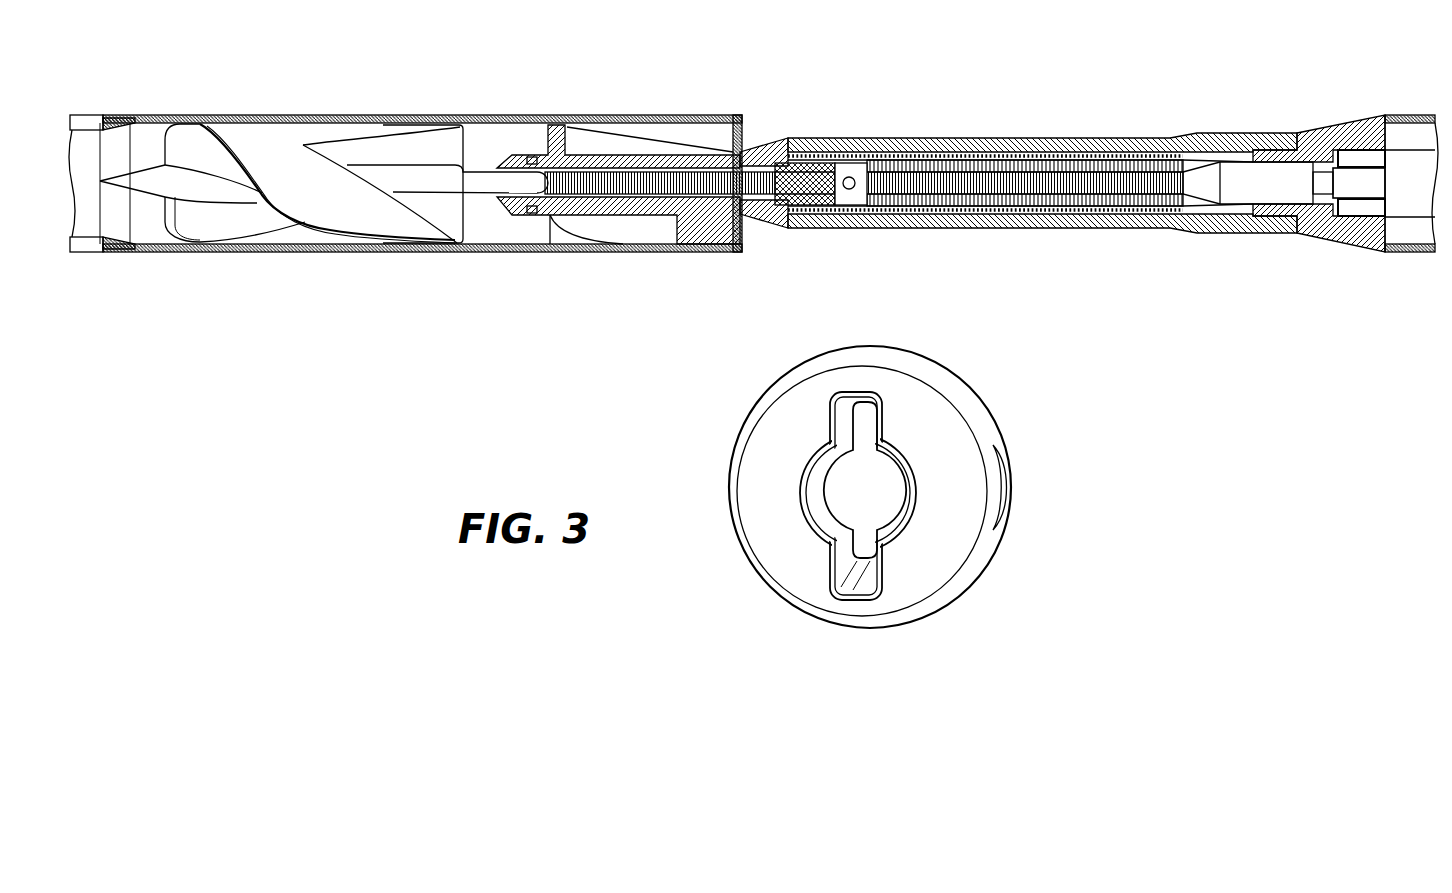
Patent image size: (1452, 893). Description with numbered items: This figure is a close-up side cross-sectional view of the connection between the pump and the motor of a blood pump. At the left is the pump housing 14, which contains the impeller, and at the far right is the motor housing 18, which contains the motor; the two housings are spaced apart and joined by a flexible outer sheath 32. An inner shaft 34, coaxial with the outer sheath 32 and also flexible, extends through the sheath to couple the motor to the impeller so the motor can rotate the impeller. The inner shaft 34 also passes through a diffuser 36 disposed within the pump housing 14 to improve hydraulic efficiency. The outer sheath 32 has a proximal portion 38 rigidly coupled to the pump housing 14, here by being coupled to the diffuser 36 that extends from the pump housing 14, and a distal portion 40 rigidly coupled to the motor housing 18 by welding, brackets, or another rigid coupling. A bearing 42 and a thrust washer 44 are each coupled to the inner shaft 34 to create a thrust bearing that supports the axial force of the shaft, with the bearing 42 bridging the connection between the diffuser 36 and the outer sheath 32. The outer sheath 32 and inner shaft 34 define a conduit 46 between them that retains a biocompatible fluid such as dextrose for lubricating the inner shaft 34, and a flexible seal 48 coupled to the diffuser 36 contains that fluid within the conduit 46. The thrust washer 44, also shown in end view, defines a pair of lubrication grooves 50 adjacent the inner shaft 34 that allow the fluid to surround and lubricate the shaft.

The pump housing 14 is at (414, 118).
The motor housing 18 is at (1383, 117).
The outer sheath 32 is at (958, 138).
The inner shaft 34 is at (1028, 187).
The diffuser 36 is at (592, 140).
The proximal portion 38 is at (790, 118).
The distal portion 40 is at (1247, 115).
The bearing 42 is at (808, 206).
The thrust washer 44 is at (853, 166).
The conduit 46 is at (936, 202).
The flexible seal 48 is at (505, 199).
The lubrication grooves 50 is at (848, 420).